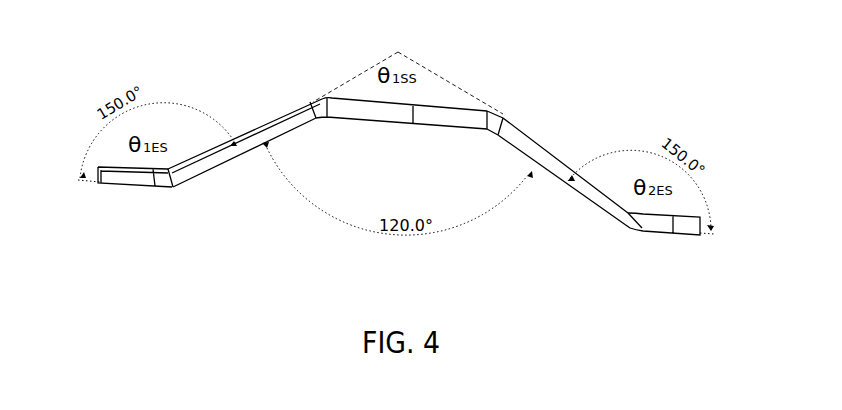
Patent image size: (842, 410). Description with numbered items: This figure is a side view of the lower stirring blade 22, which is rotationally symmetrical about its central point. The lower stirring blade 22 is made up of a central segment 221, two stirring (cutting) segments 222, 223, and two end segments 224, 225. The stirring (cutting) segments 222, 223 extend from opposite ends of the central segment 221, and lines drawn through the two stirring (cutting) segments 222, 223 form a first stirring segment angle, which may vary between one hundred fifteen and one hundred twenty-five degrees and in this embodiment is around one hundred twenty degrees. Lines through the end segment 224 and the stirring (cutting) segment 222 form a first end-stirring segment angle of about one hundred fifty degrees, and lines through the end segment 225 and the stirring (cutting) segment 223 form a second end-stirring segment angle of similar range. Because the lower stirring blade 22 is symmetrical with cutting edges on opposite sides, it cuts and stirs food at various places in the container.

The lower stirring blade 22 is at (395, 165).
The central segment 221 is at (372, 119).
The stirring (cutting) segment 222 is at (213, 162).
The stirring (cutting) segment 223 is at (587, 198).
The end segment 224 is at (130, 180).
The end segment 225 is at (663, 223).